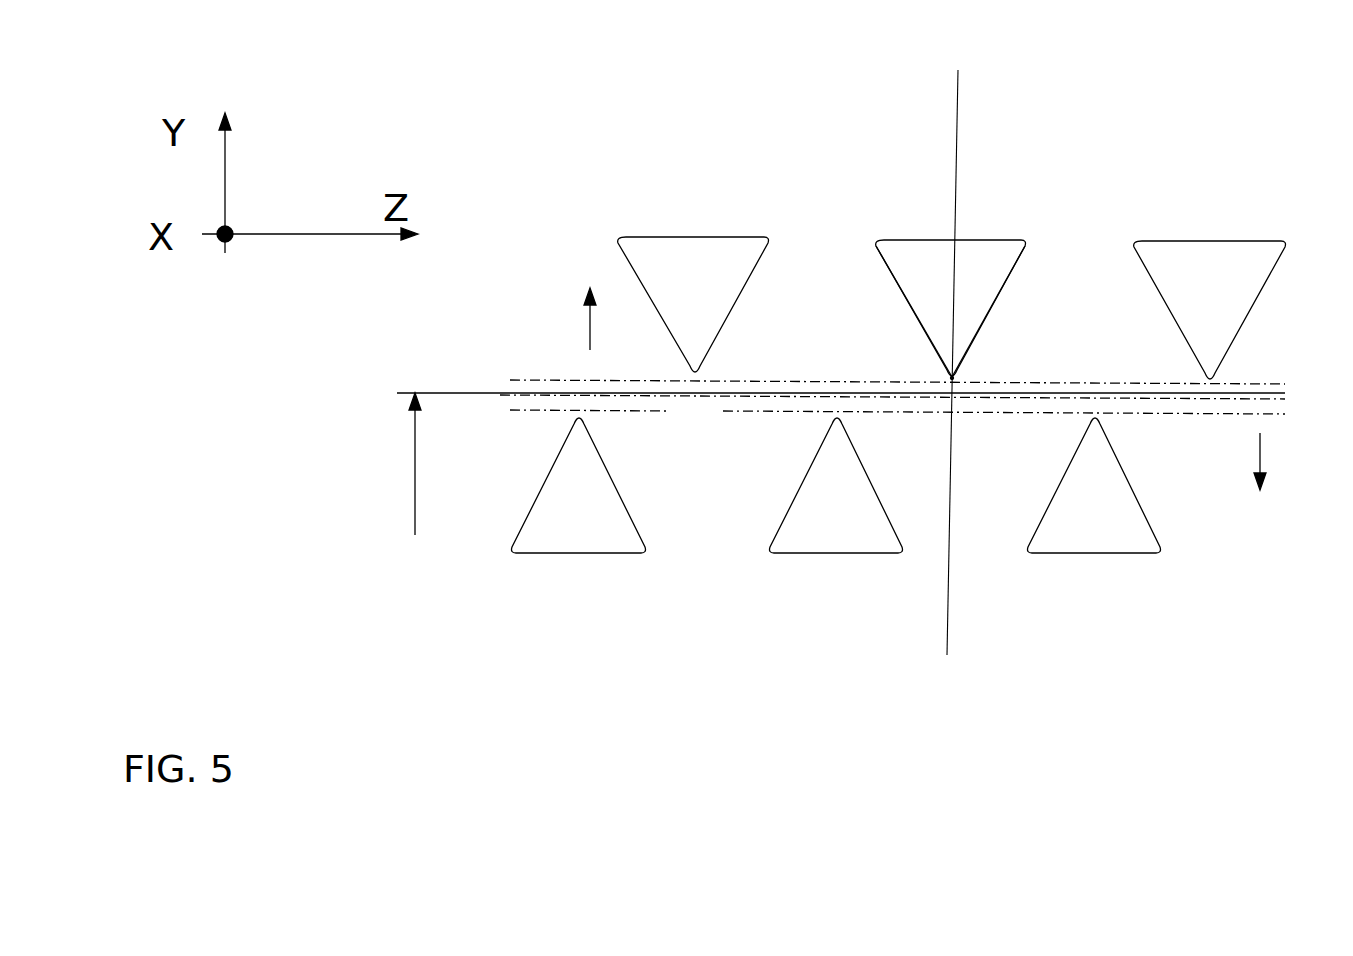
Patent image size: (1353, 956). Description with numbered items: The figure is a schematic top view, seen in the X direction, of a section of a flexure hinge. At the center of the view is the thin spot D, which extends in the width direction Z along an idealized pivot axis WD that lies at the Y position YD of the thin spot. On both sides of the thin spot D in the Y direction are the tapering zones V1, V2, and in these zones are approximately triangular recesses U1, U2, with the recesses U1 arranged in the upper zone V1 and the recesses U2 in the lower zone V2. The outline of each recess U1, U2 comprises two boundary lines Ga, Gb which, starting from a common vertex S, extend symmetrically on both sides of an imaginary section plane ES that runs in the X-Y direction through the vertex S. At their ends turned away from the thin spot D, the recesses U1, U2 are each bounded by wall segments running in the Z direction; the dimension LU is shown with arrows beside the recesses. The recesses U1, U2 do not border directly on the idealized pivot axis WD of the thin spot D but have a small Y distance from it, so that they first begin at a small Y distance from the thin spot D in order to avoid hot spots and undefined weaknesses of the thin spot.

The recess U1 is at (705, 255).
The recess U2 is at (558, 533).
The boundary line Ga is at (905, 293).
The boundary line Gb is at (1003, 293).
The common vertex S is at (950, 380).
The imaginary section plane ES is at (958, 155).
The deflection unit height direction LU is at (580, 328).
The thin spot D is at (367, 392).
The idealized pivot axis WD is at (742, 442).
The Y position of the thin spot YD is at (394, 488).
The tapering zone V1 is at (613, 108).
The tapering zone V2 is at (668, 748).